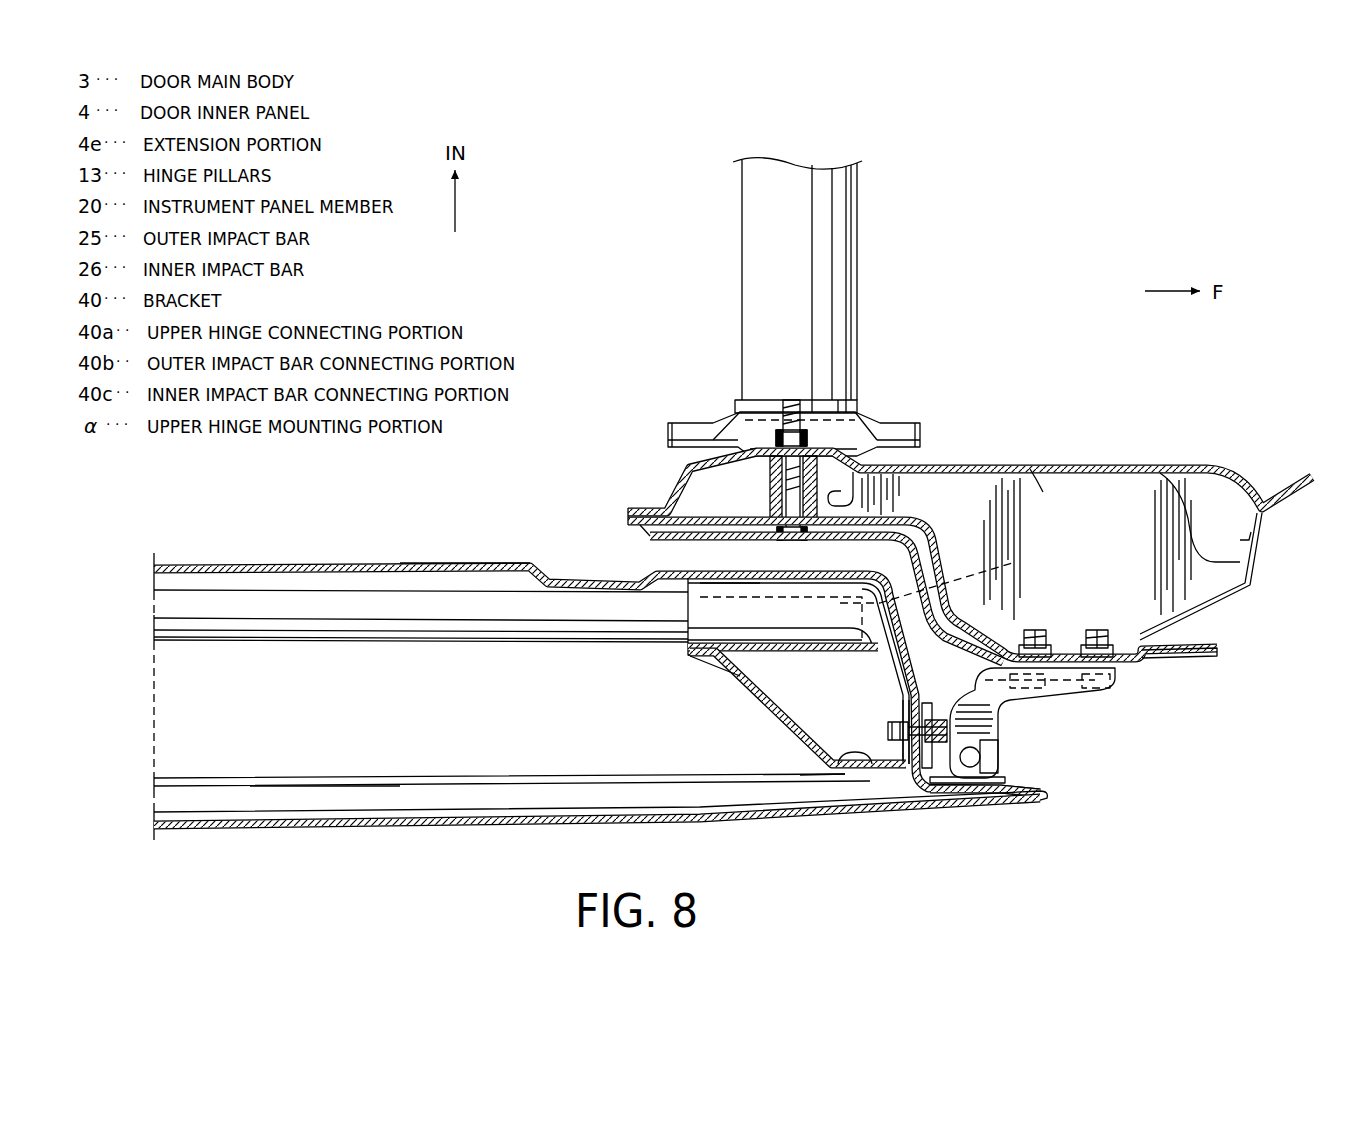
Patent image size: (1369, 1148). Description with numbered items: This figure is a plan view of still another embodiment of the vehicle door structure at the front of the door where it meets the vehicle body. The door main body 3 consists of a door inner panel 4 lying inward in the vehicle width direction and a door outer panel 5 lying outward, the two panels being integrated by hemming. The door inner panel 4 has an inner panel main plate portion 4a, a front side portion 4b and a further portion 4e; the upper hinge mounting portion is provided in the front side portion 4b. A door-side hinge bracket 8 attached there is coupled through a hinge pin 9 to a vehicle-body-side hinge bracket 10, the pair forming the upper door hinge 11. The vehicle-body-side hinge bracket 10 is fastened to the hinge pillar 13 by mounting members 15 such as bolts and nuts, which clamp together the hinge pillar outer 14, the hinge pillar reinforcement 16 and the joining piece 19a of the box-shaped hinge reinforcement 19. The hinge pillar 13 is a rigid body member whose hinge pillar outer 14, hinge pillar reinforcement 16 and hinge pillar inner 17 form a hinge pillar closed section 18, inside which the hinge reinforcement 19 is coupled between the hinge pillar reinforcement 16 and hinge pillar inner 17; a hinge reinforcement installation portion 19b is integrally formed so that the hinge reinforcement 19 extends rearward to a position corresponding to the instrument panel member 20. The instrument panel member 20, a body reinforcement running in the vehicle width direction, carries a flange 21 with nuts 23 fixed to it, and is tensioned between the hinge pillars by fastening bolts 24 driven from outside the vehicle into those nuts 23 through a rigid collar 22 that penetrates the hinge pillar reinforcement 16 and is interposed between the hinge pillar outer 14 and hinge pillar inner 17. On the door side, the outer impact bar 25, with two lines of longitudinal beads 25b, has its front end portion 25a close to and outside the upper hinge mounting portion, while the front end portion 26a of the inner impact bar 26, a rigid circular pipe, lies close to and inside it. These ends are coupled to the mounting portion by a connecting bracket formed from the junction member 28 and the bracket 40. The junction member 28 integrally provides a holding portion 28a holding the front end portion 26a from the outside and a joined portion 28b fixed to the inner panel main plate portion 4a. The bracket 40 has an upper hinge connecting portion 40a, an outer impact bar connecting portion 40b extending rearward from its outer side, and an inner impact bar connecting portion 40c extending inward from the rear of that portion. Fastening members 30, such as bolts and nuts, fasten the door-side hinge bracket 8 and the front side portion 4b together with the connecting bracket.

The door main body 3 is at (212, 553).
The door inner panel 4 is at (290, 563).
The inner panel main plate portion 4a is at (447, 563).
The front side portion 4b is at (950, 623).
The extension portion 4e is at (945, 791).
The door outer panel 5 is at (746, 828).
The door-side hinge bracket 8 is at (1000, 771).
The hinge pin 9 is at (980, 757).
The vehicle-body-side hinge bracket 10 is at (1000, 713).
The upper door hinge 11 is at (1062, 742).
The hinge pillar 13 is at (1086, 452).
The hinge pillar outer 14 is at (1150, 660).
The mounting members 15 is at (1097, 630).
The hinge pillar reinforcement 16 is at (918, 517).
The hinge pillar inner 17 is at (975, 465).
The hinge pillar closed section 18 is at (1210, 500).
The hinge reinforcement 19 is at (1043, 490).
The joining piece 19a is at (1127, 637).
The hinge reinforcement installation portion 19b is at (866, 480).
The instrument panel member 20 is at (742, 270).
The flange 21 is at (668, 432).
The collar 22 is at (770, 497).
The nuts 23 is at (775, 435).
The fastening bolts 24 is at (784, 541).
The outer impact bar 25 is at (463, 774).
The front end portion of the outer impact bar 25a is at (882, 790).
The beads 25b is at (327, 806).
The inner impact bar 26 is at (298, 641).
The front end portion of the inner impact bar 26a is at (948, 571).
The junction member 28 is at (753, 654).
The holding portion 28a is at (781, 650).
The joined portion 28b is at (727, 600).
The fastening members 30 is at (888, 732).
The bracket 40 is at (780, 742).
The upper hinge connecting portion 40a is at (905, 715).
The outer impact bar connecting portion 40b is at (840, 766).
The inner impact bar connecting portion 40c is at (767, 713).